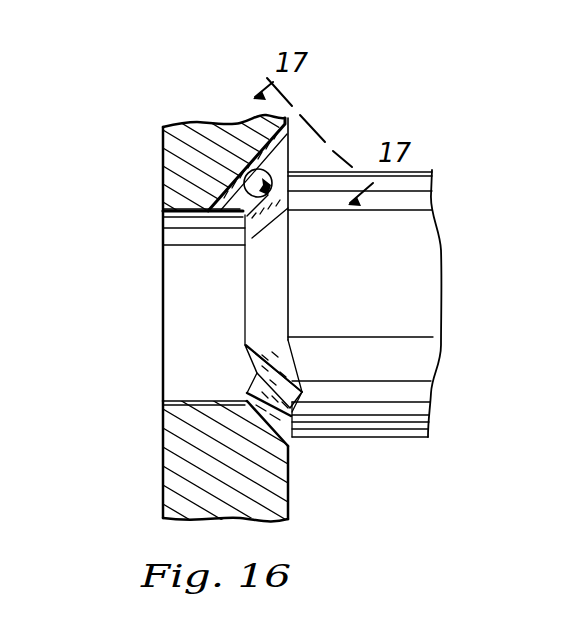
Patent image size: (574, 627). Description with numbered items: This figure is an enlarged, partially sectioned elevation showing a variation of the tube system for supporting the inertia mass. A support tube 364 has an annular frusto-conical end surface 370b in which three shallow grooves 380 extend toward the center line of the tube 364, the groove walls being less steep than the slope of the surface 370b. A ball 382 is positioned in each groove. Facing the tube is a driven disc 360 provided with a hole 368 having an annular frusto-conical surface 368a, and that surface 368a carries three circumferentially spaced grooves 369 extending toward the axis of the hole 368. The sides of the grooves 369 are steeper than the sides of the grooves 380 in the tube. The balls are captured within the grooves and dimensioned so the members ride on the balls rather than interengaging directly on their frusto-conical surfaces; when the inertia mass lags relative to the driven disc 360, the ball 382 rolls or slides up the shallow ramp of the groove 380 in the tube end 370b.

The driven disc 360 is at (172, 168).
The support tube 364 is at (381, 413).
The hole 368 is at (170, 404).
The annular frusto-conical surface 368a is at (292, 395).
The grooves 369 is at (282, 150).
The annular frusto-conical end surface 370b is at (254, 288).
The shallow grooves 380 is at (243, 215).
The ball 382 is at (271, 195).